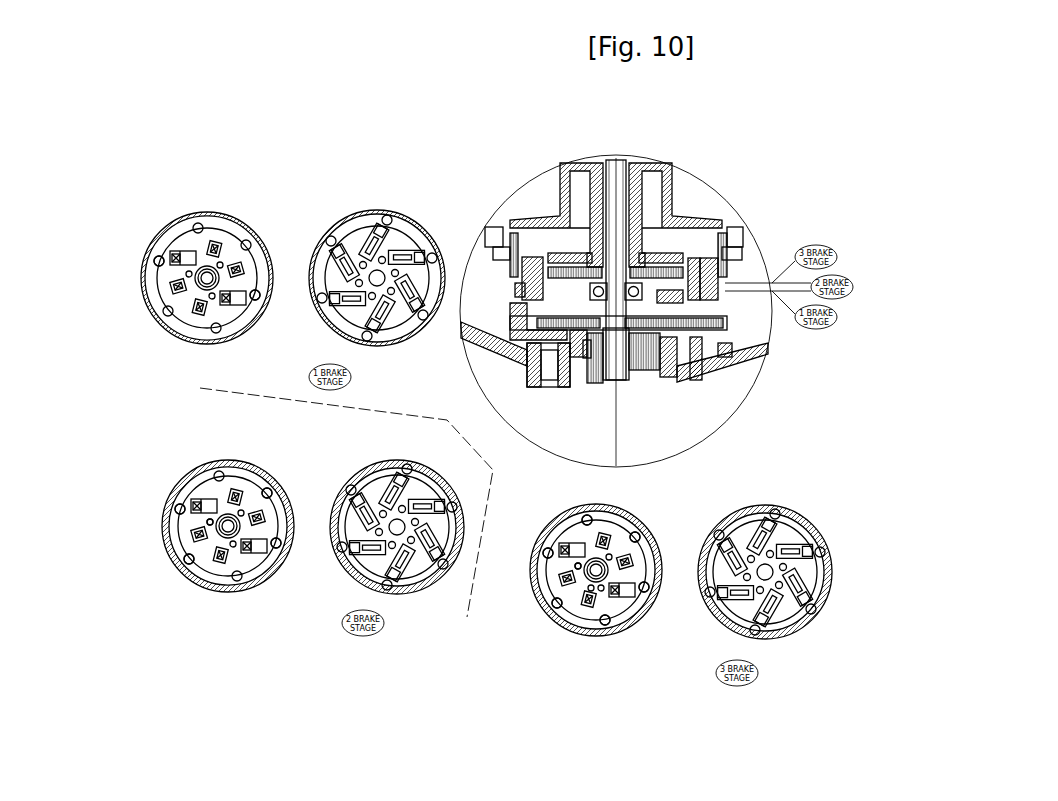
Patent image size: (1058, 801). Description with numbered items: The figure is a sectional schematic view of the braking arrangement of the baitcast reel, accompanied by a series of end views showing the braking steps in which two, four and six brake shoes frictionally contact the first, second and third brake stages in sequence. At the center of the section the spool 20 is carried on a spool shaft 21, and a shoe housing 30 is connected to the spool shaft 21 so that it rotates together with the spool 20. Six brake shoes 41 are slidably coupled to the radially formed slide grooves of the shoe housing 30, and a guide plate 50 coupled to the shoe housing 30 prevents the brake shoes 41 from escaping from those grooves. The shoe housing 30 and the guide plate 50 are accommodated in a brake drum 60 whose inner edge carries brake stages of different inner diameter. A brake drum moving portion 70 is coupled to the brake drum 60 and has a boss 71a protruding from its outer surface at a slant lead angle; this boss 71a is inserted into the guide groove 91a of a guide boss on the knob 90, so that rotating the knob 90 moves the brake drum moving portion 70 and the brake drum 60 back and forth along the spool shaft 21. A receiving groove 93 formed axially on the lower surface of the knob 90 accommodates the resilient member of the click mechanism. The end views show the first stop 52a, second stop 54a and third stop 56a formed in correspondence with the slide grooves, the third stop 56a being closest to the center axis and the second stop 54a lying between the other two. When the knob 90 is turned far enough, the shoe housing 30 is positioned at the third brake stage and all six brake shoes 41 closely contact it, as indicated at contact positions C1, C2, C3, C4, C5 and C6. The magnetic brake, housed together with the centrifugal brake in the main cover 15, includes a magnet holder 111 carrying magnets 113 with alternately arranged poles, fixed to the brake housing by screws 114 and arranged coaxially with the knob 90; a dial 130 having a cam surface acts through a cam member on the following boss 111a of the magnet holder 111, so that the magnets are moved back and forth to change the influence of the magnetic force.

The main cover 15 is at (738, 367).
The spool 20 is at (560, 185).
The spool shaft 21 is at (612, 188).
The shoe housing 30 is at (667, 253).
The brake shoes 41 is at (690, 262).
The guide plate 50 is at (575, 278).
The first stop 52a is at (190, 253).
The second stop 54a is at (190, 525).
The third stop 56a is at (587, 597).
The brake drum 60 is at (522, 267).
The brake drum moving portion 70 is at (510, 340).
The boss 71a is at (515, 290).
The knob 90 is at (627, 373).
The guide groove 91a is at (512, 305).
The receiving groove 93 is at (583, 352).
The magnet holder 111 is at (677, 350).
The following boss 111a is at (700, 353).
The magnets 113 is at (578, 353).
The screws 114 is at (550, 383).
The dial 130 is at (663, 310).
The first brake shoe contact position C1 is at (466, 449).
The second brake shoe contact position C2 is at (334, 400).
The third brake shoe contact position C3 is at (464, 505).
The fourth brake shoe contact position C4 is at (355, 592).
The fifth brake shoe contact position C5 is at (599, 637).
The sixth brake shoe contact position C6 is at (594, 504).